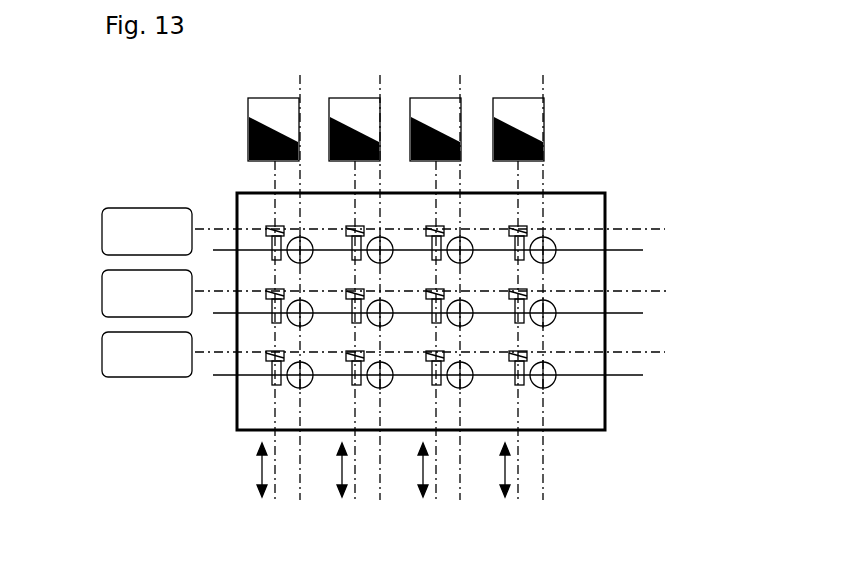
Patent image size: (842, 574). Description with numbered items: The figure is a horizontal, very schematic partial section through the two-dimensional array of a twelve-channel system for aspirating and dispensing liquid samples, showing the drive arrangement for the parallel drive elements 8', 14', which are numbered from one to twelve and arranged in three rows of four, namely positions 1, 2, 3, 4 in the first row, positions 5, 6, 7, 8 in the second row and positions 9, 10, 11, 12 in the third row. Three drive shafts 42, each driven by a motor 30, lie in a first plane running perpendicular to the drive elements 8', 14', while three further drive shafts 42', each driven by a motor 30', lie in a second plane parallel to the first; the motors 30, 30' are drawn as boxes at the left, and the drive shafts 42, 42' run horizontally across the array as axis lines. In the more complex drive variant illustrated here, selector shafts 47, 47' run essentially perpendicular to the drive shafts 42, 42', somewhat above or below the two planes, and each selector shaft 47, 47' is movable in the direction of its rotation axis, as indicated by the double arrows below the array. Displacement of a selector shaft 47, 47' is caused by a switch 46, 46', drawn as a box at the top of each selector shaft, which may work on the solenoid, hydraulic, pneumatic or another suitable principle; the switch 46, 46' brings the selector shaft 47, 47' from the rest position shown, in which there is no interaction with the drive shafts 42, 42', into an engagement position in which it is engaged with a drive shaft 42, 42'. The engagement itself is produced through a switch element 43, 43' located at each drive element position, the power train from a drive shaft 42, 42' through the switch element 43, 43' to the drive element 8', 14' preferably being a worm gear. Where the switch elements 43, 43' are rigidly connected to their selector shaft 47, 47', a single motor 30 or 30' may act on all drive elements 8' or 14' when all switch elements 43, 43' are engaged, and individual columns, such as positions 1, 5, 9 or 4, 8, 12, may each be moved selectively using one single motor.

The switch 46 is at (396, 101).
The switch 46' is at (396, 101).
The selector shaft 47 is at (397, 350).
The selector shaft 47' is at (397, 350).
The drive shaft 42 is at (495, 278).
The drive shaft 42' is at (495, 278).
The motor 30 is at (107, 292).
The motor 30' is at (107, 292).
The switch element 43 is at (188, 406).
The switch element 43' is at (188, 406).
The first drive element 8' is at (405, 331).
The second drive element 14' is at (405, 331).
The drive element position 1 is at (305, 257).
The drive element position 2 is at (386, 257).
The drive element position 3 is at (466, 257).
The drive element position 4 is at (548, 257).
The drive element position 5 is at (305, 315).
The drive element position 6 is at (386, 315).
The drive element position 7 is at (466, 315).
The drive element position 8 is at (548, 315).
The drive element position 9 is at (305, 380).
The drive element position 10 is at (392, 380).
The drive element position 11 is at (472, 380).
The drive element position 12 is at (553, 380).